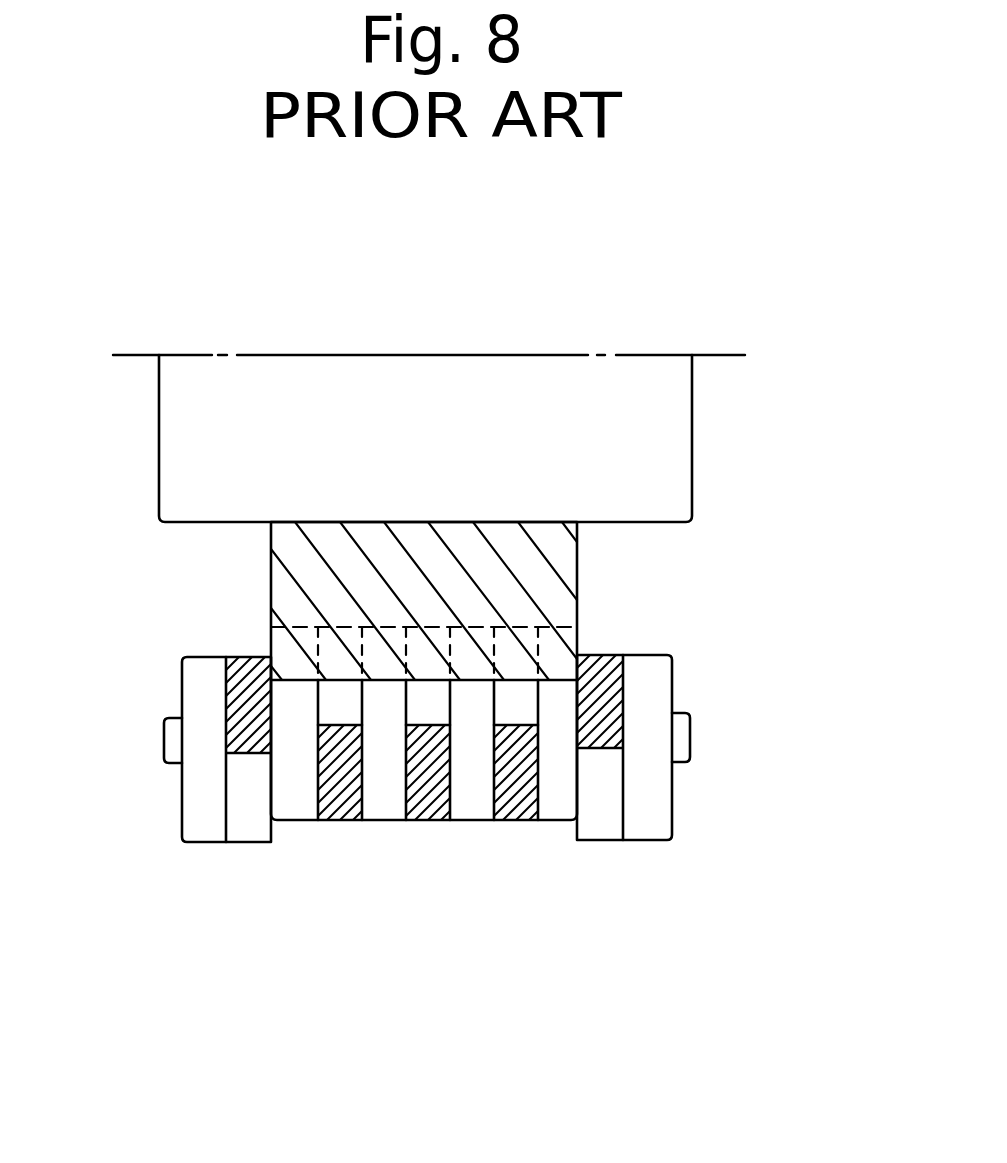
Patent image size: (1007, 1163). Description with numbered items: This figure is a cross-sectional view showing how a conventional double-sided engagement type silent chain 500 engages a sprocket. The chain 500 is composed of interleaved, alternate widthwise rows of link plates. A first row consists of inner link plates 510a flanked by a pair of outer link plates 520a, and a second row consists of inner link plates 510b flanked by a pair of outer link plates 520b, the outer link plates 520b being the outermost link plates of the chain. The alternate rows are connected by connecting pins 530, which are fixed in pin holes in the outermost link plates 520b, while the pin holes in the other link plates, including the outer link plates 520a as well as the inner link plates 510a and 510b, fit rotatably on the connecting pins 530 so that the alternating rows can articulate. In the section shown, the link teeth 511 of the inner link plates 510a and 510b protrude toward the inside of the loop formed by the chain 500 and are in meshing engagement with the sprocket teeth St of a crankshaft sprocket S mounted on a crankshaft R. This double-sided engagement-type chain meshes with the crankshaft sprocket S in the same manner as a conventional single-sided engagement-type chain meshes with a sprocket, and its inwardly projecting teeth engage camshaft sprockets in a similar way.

The crankshaft R is at (738, 455).
The crankshaft sprocket S is at (614, 589).
The sprocket teeth St is at (293, 660).
The link teeth 511 is at (557, 658).
The double-sided engagement type silent chain 500 is at (450, 850).
The inner link plates 510a is at (345, 828).
The inner link plates 510b is at (298, 828).
The outer link plates 520a is at (252, 843).
The outer link plates 520b is at (197, 847).
The connecting pins 530 is at (690, 738).